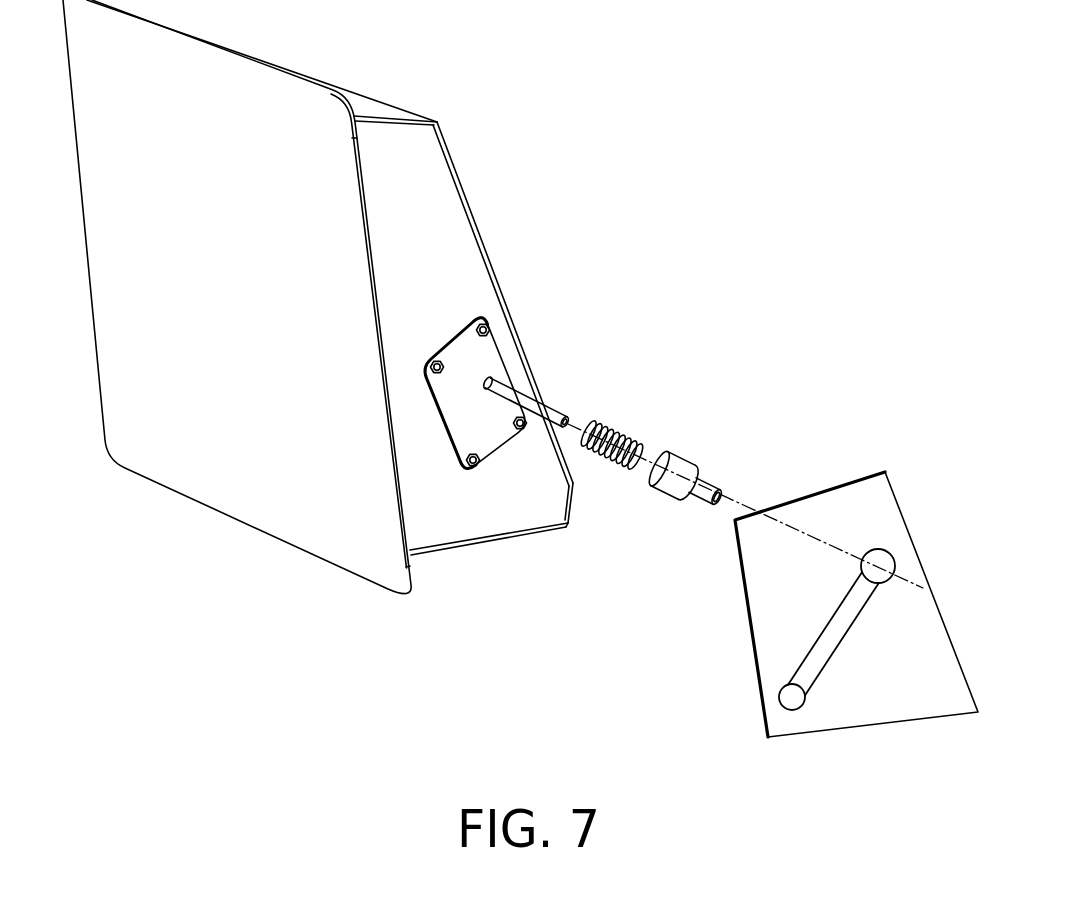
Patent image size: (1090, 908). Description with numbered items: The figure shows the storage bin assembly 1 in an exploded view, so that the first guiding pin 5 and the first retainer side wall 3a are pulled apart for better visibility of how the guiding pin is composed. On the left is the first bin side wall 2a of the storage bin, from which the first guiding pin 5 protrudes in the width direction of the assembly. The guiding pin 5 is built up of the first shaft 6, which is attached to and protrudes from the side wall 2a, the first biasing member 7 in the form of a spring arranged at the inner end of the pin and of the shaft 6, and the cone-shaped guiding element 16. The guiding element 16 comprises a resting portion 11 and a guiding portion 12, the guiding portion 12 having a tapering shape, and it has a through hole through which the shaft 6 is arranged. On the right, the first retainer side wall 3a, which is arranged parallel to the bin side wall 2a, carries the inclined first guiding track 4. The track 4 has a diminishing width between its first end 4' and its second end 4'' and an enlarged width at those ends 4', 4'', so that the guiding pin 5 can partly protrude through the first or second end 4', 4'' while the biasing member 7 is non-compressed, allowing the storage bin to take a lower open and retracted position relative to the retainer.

The storage bin assembly 1 is at (520, 370).
The first bin side wall 2a is at (418, 228).
The first retainer side wall 3a is at (872, 518).
The first guiding track 4 is at (875, 642).
The first end of the guiding track 4' is at (916, 538).
The second end of the guiding track 4'' is at (820, 737).
The first guiding pin 5 is at (688, 370).
The first shaft 6 is at (552, 413).
The first biasing member 7 is at (612, 423).
The resting portion 11 is at (709, 450).
The guiding portion 12 is at (698, 463).
The guiding element 16 is at (665, 510).